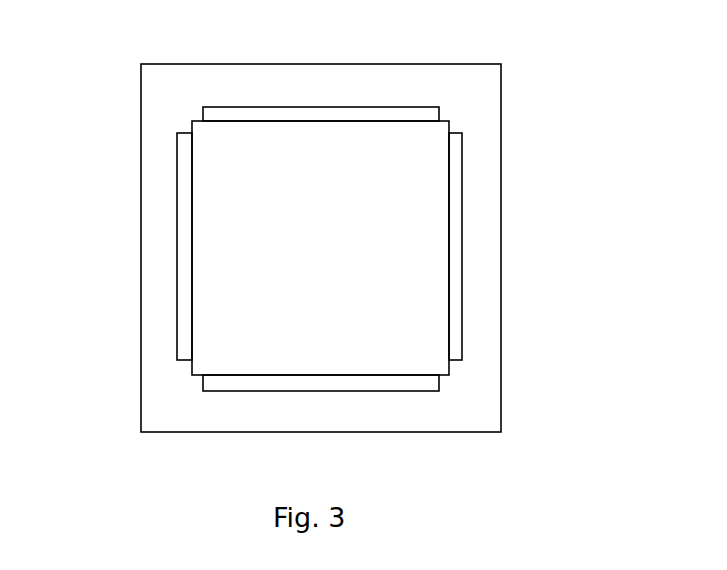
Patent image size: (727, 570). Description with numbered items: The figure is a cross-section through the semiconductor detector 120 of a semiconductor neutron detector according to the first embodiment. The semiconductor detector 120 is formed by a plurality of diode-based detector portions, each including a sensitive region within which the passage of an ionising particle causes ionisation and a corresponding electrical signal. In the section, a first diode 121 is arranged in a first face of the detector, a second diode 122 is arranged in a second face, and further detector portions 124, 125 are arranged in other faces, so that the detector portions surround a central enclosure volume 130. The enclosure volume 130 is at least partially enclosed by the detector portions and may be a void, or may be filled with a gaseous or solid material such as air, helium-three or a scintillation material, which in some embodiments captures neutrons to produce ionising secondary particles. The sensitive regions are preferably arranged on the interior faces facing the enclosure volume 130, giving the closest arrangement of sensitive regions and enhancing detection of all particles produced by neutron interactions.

The semiconductor detector 120 is at (167, 90).
The first diode 121 is at (185, 270).
The second diode 122 is at (302, 105).
The detector portion 124 is at (458, 223).
The detector portion 125 is at (357, 382).
The enclosure volume 130 is at (383, 178).